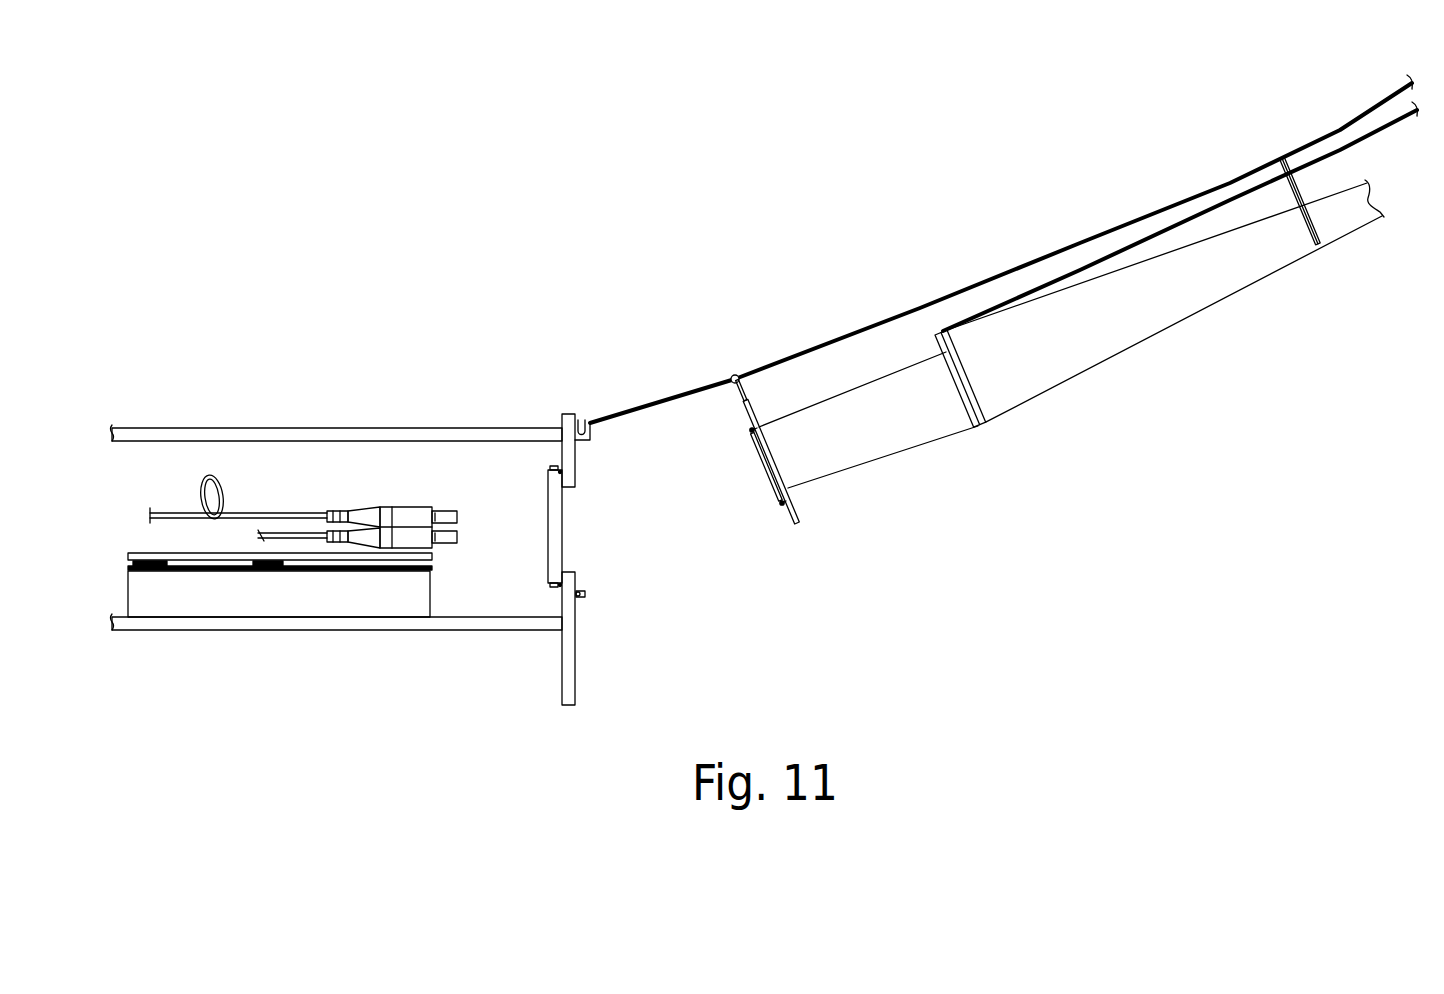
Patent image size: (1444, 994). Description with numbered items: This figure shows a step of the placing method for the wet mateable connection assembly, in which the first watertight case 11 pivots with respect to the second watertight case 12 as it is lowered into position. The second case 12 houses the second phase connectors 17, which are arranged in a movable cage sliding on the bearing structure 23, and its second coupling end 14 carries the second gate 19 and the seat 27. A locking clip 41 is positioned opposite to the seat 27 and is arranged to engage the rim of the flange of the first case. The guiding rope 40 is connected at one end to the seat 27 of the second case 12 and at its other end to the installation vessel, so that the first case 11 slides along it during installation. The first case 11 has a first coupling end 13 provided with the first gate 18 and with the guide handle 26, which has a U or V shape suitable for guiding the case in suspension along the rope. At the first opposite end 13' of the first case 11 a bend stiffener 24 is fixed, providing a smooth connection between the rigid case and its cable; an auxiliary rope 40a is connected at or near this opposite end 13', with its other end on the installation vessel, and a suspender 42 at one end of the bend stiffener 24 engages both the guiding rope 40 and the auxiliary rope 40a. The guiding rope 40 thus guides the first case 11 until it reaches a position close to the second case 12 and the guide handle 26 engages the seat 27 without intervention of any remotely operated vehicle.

The first watertight case 11 is at (870, 432).
The second watertight case 12 is at (418, 623).
The first coupling end 13 is at (796, 477).
The first opposite end 13' is at (995, 412).
The second coupling end 14 is at (568, 620).
The second phase connectors 17 is at (396, 490).
The first gate 18 is at (763, 463).
The second gate 19 is at (555, 505).
The bearing structure 23 is at (237, 573).
The bend stiffener 24 is at (1228, 261).
The guide handle 26 is at (732, 376).
The seat 27 is at (586, 421).
The guiding rope 40 is at (820, 347).
The auxiliary rope 40a is at (1170, 227).
The locking clip 41 is at (588, 593).
The suspender 42 is at (1301, 200).